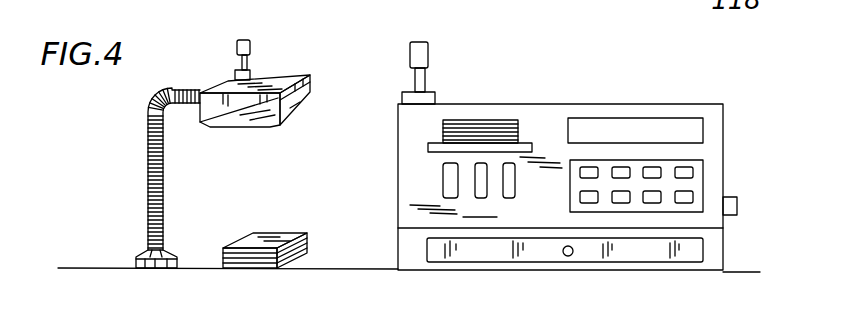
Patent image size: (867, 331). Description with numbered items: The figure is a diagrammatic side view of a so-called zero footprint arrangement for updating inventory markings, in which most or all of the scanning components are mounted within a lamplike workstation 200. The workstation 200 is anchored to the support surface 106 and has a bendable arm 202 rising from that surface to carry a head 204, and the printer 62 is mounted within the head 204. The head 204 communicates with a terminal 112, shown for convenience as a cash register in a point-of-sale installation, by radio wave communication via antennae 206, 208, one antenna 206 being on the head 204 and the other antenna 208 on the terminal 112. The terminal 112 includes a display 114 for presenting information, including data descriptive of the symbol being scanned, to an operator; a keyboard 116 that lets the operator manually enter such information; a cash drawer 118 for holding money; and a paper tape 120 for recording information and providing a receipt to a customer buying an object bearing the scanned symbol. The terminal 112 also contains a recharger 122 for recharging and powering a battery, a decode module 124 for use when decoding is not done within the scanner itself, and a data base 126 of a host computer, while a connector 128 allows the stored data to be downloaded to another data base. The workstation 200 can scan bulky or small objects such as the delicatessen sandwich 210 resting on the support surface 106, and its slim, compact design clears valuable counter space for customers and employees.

The printer 62 is at (305, 100).
The support surface 106 is at (80, 268).
The terminal 112 is at (573, 98).
The display 114 is at (643, 122).
The keyboard 116 is at (685, 168).
The cash drawer 118 is at (692, 262).
The paper tape 120 is at (485, 125).
The recharger 122 is at (443, 173).
The decode module 124 is at (481, 198).
The data base 126 is at (513, 188).
The connector 128 is at (737, 198).
The lamplike workstation 200 is at (259, 52).
The bendable arm 202 is at (163, 153).
The head 204 is at (312, 78).
The antenna 206 is at (248, 38).
The antenna 208 is at (428, 42).
The delicatessen sandwich 210 is at (288, 233).